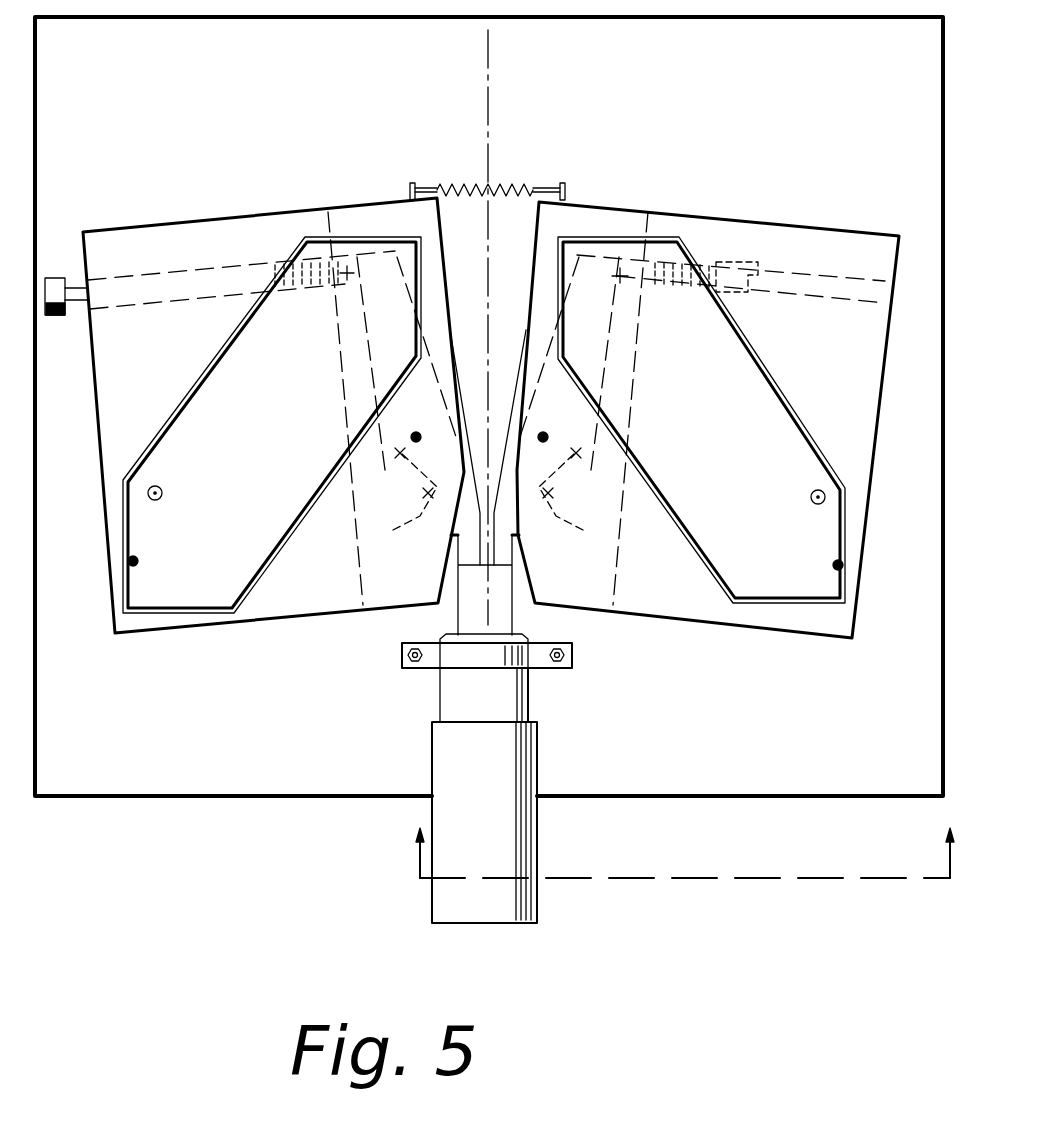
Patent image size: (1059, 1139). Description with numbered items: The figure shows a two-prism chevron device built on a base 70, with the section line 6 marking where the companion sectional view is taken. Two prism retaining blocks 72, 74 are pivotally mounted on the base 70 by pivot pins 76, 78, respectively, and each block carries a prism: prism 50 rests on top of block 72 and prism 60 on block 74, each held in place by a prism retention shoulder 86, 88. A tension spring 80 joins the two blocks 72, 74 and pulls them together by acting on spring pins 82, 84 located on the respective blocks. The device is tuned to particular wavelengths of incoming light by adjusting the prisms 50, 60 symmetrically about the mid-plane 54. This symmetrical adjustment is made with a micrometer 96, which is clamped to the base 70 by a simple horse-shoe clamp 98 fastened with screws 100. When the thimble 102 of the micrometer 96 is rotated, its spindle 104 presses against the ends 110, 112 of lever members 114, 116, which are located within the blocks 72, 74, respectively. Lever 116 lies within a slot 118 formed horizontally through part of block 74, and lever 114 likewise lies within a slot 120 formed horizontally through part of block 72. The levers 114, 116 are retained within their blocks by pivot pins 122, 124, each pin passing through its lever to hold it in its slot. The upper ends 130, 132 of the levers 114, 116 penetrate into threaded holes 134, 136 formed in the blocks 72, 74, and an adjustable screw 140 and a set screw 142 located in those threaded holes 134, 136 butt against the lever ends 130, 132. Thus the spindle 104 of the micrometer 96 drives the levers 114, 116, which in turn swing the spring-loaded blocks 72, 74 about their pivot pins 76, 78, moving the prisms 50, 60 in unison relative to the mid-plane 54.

The section line 6- 6 is at (684, 870).
The prism 50 is at (227, 608).
The mid-plane 54 is at (489, 90).
The prism 60 is at (753, 558).
The base 70 is at (808, 108).
The prism retaining block 72 is at (170, 363).
The prism retaining block 74 is at (845, 375).
The pivot pin 76 is at (140, 561).
The pivot pin 78 is at (834, 563).
The tension spring 80 is at (530, 187).
The spring pin 82 is at (410, 190).
The spring pin 84 is at (567, 196).
The prism retention shoulder 86 is at (178, 418).
The prism retention shoulder 88 is at (822, 445).
The micrometer 96 is at (507, 760).
The horse-shoe clamp 98 is at (545, 666).
The screws 100 is at (408, 655).
The thimble 102 is at (501, 833).
The spindle 104 is at (501, 625).
The end of lever member 110 is at (460, 550).
The end of lever member 112 is at (506, 553).
The lever member 114 is at (393, 501).
The lever member 116 is at (566, 499).
The slot 118 is at (597, 552).
The slot 120 is at (373, 580).
The pivot pin 122 is at (413, 442).
The pivot pin 124 is at (542, 443).
The upper end of lever 130 is at (322, 291).
The upper end of lever 132 is at (660, 308).
The threaded hole 134 is at (280, 263).
The threaded hole 136 is at (875, 282).
The adjustable screw 140 is at (56, 278).
The set screw 142 is at (720, 275).